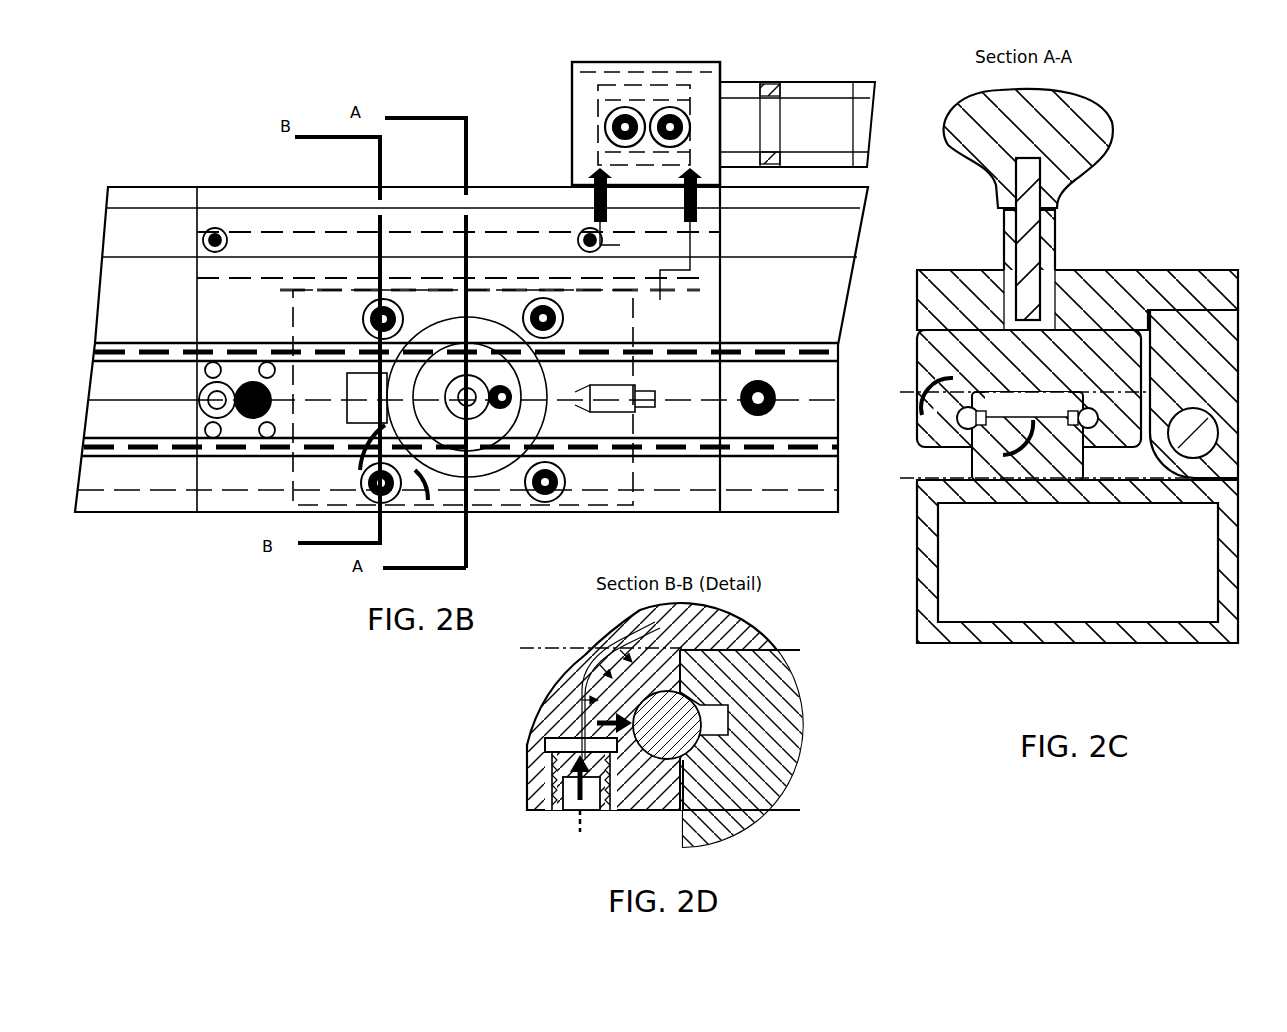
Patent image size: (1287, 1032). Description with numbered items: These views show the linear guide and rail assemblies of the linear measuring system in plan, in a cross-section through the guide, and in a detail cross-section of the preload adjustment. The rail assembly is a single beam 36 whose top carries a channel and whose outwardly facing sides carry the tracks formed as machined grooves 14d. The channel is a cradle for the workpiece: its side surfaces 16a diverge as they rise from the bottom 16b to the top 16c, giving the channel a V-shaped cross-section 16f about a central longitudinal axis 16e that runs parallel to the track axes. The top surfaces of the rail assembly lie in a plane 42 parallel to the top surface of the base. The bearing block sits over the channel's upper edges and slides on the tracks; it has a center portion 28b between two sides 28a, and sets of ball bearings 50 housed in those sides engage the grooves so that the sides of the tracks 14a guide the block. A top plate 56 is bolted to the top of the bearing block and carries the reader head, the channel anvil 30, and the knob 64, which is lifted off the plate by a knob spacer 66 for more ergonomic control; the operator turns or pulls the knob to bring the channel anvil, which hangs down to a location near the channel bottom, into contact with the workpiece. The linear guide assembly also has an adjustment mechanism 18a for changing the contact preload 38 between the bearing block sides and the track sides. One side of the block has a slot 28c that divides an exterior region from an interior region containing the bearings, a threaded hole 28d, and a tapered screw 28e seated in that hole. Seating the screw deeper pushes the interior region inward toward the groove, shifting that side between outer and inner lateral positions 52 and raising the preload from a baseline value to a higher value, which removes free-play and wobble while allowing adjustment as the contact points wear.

In FIG. 2B, the central longitudinal axis of channel 16e is at (140, 400).
In FIG. 2B, the channel anvil 30 is at (200, 395).
In FIG. 2C, the knob 64 is at (1085, 118).
In FIG. 2C, the knob spacer 66 is at (1060, 228).
In FIG. 2C, the top plate 56 is at (968, 275).
In FIG. 2C, the side surfaces of channel 16a is at (1070, 470).
In FIG. 2D, the side surfaces of channel 16a is at (762, 672).
In FIG. 2C, the top of channel 16c is at (1130, 395).
In FIG. 2C, the center portion of bearing block 28b is at (1022, 372).
In FIG. 2C, the slot 28c is at (965, 388).
In FIG. 2D, the slot 28c is at (655, 638).
In FIG. 2C, the plane 42 is at (902, 393).
In FIG. 2C, the beam 36 is at (1000, 468).
In FIG. 2C, the V-shaped cross-section 16f is at (1018, 430).
In FIG. 2C, the bottom of channel 16b is at (1015, 402).
In FIG. 2D, the adjustment mechanism 18a is at (505, 745).
In FIG. 2D, the grooves 14d is at (702, 695).
In FIG. 2D, the ball bearings 50 is at (672, 725).
In FIG. 2D, the sides of tracks 14a is at (690, 770).
In FIG. 2D, the sides of bearing block 28a is at (690, 808).
In FIG. 2D, the threaded hole 28d is at (548, 752).
In FIG. 2D, the tapered screw 28e is at (568, 795).
In FIG. 2D, the contact preload 38 is at (645, 735).
In FIG. 2D, the outer and inner lateral positions 52 is at (633, 640).